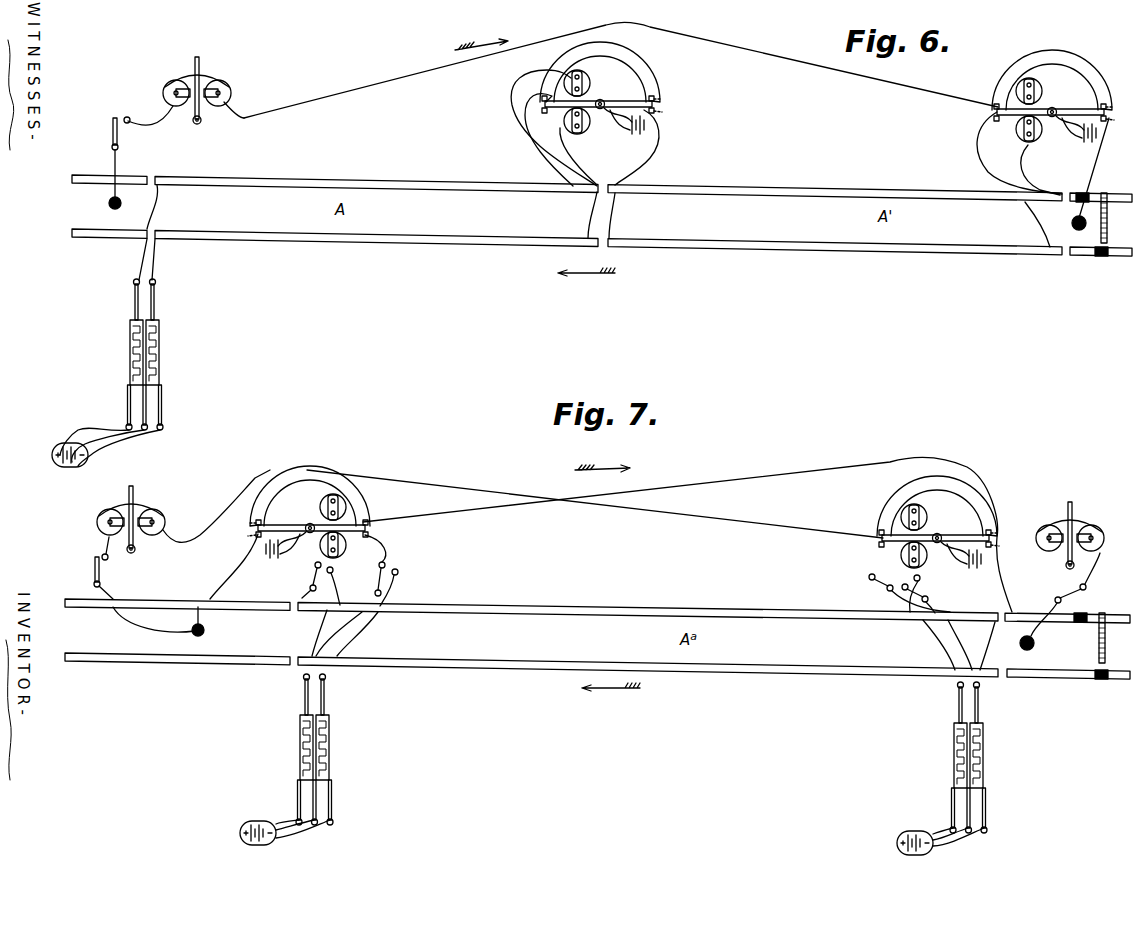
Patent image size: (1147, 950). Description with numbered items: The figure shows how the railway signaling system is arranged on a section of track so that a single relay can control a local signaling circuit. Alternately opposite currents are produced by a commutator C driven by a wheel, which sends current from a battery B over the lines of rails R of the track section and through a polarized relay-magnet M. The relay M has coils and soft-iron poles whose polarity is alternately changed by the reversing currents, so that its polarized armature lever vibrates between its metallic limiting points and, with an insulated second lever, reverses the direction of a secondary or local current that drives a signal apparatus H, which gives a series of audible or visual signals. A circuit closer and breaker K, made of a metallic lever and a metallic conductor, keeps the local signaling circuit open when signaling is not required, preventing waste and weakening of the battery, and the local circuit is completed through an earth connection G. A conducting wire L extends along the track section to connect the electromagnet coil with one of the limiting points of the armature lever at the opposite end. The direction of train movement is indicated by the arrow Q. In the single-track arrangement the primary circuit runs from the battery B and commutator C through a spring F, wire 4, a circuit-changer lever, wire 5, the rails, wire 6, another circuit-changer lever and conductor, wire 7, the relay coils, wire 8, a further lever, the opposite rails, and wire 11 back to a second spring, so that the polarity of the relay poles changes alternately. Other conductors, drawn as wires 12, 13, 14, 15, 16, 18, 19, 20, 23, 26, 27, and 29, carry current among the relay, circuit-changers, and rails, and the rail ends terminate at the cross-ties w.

In FIG. 6, the wire 4 is at (137, 259).
In FIG. 6, the wire 5 is at (160, 216).
In FIG. 6, the wire 6 is at (550, 154).
In FIG. 6, the wire 7 is at (158, 259).
In FIG. 6, the wire 8 is at (1094, 168).
In FIG. 6, the wire 11 is at (609, 56).
In FIG. 6, the outer arc conductor 12 is at (637, 44).
In FIG. 6, the conductor 13 is at (580, 166).
In FIG. 6, the conductor 14 is at (638, 147).
In FIG. 6, the conductor 15 is at (1019, 153).
In FIG. 6, the conductor 16 is at (1039, 170).
In FIG. 7, the conductor 18 is at (158, 623).
In FIG. 6, the conductor 19 is at (1073, 70).
In FIG. 6, the conductor 20 is at (1081, 46).
In FIG. 7, the conductor 23 is at (234, 566).
In FIG. 7, the inner arc conductor 26 is at (312, 476).
In FIG. 7, the outer arc conductor 27 is at (312, 458).
In FIG. 7, the wire to contact 29 is at (1038, 626).
In FIG. 6, the rail R is at (335, 177).
In FIG. 6, the commutator C is at (143, 354).
In FIG. 6, the battery B is at (106, 455).
In FIG. 6, the earth-connection G is at (107, 205).
In FIG. 6, the signal apparatus H is at (195, 90).
In FIG. 6, the circuit closer and breaker K is at (118, 148).
In FIG. 6, the polarized relay-magnet M is at (612, 96).
In FIG. 6, the conducting-wire L is at (621, 70).
In FIG. 6, the arrow Q is at (481, 37).
In FIG. 7, the spring F is at (308, 749).
In FIG. 6, the cross-tie w is at (1094, 225).